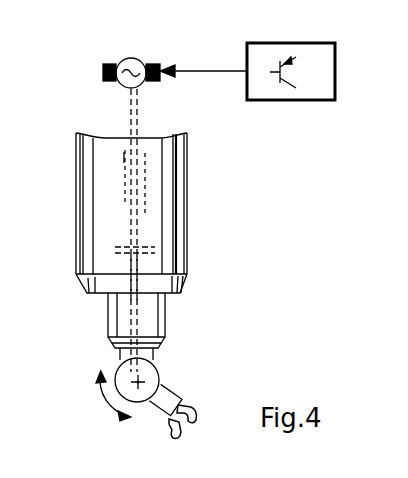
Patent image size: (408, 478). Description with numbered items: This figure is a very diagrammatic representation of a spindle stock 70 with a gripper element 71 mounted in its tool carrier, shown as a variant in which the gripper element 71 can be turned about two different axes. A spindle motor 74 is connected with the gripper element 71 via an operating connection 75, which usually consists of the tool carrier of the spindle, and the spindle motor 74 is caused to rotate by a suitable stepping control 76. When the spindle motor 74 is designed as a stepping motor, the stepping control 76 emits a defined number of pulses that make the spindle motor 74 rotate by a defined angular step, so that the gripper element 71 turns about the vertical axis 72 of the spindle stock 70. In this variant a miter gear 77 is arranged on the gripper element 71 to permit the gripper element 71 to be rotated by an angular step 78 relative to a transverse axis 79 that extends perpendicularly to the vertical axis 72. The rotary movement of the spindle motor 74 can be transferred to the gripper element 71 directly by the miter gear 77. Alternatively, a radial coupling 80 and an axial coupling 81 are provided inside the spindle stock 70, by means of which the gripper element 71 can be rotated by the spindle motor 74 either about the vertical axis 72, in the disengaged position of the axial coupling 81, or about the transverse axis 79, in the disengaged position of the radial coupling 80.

The spindle stock 70 is at (170, 172).
The gripper element 71 is at (165, 400).
The vertical axis 72 is at (137, 276).
The spindle motor 74 is at (140, 59).
The operating connection 75 is at (138, 117).
The stepping control 76 is at (308, 60).
The miter gear 77 is at (162, 372).
The angular step 78 is at (103, 397).
The transverse axis 79 is at (122, 383).
The radial coupling 80 is at (124, 160).
The axial coupling 81 is at (113, 248).